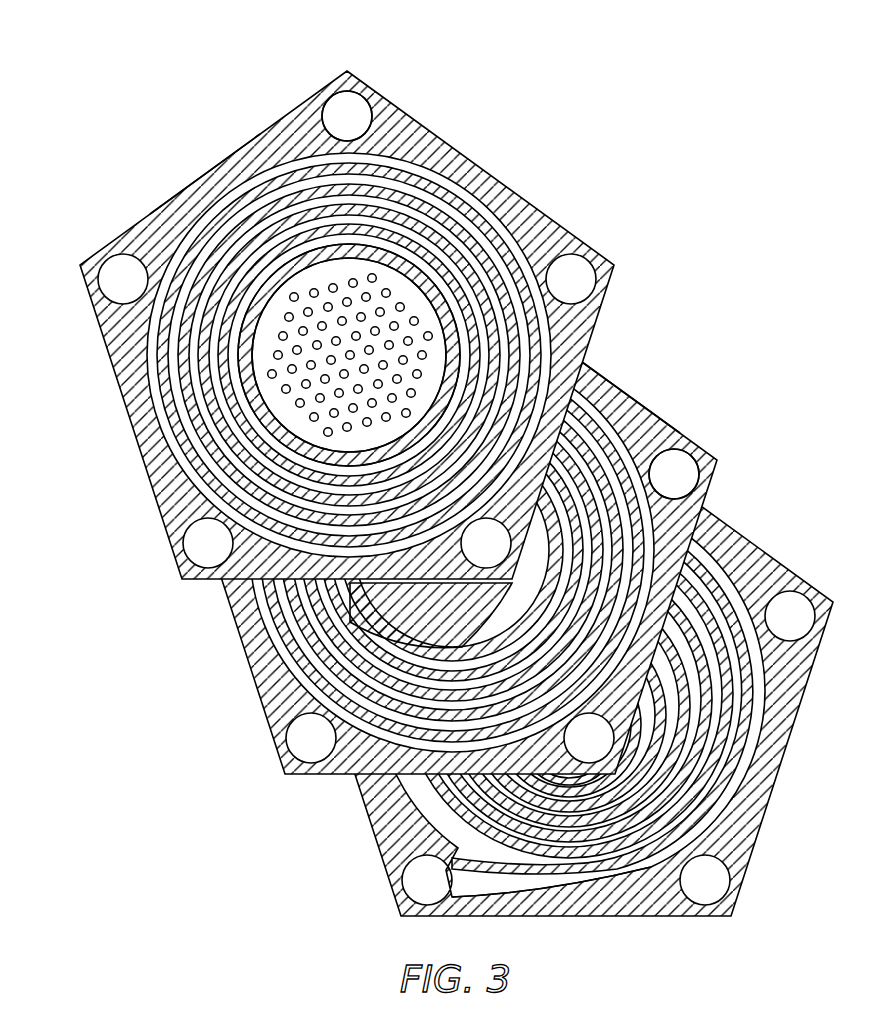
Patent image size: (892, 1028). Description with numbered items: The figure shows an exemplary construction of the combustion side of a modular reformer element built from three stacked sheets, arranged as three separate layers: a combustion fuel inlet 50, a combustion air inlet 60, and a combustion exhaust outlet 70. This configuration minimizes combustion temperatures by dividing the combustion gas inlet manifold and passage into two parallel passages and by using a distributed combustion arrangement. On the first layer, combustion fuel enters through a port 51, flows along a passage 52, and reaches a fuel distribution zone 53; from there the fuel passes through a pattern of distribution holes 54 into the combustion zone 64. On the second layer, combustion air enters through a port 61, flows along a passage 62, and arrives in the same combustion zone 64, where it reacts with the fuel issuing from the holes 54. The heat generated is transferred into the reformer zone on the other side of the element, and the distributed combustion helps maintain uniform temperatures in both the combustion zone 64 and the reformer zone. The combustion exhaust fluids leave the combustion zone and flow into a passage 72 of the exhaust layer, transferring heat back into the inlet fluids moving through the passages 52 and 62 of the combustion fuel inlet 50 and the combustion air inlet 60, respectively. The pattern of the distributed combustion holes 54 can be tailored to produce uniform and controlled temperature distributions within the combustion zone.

The combustion fuel inlet 50 is at (177, 568).
The port 51 is at (343, 112).
The passage 52 is at (213, 203).
The fuel distribution zone 53 is at (402, 262).
The distribution holes 54 is at (382, 323).
The combustion air inlet 60 is at (270, 735).
The port 61 is at (688, 467).
The passage 62 is at (613, 423).
The combustion zone 64 is at (398, 617).
The combustion exhaust outlet 70 is at (355, 795).
The passage 72 is at (563, 885).